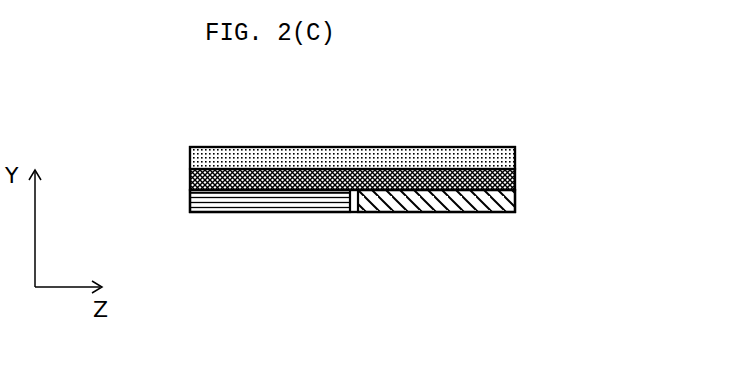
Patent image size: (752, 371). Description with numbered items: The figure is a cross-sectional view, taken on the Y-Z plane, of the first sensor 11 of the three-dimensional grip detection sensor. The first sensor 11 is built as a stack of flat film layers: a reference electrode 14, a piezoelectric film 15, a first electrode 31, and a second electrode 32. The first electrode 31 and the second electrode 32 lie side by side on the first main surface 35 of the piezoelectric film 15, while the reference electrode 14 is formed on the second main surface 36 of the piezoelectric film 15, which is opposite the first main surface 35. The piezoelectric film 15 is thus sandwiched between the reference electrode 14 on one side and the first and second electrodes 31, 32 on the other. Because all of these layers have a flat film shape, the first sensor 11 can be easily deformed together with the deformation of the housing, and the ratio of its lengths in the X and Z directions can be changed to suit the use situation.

The first sensor 11 is at (573, 88).
The reference electrode 14 is at (188, 158).
The second main surface 36 is at (402, 165).
The piezoelectric film 15 is at (517, 177).
The second electrode 32 is at (267, 213).
The first main surface 35 is at (330, 191).
The first electrode 31 is at (433, 213).